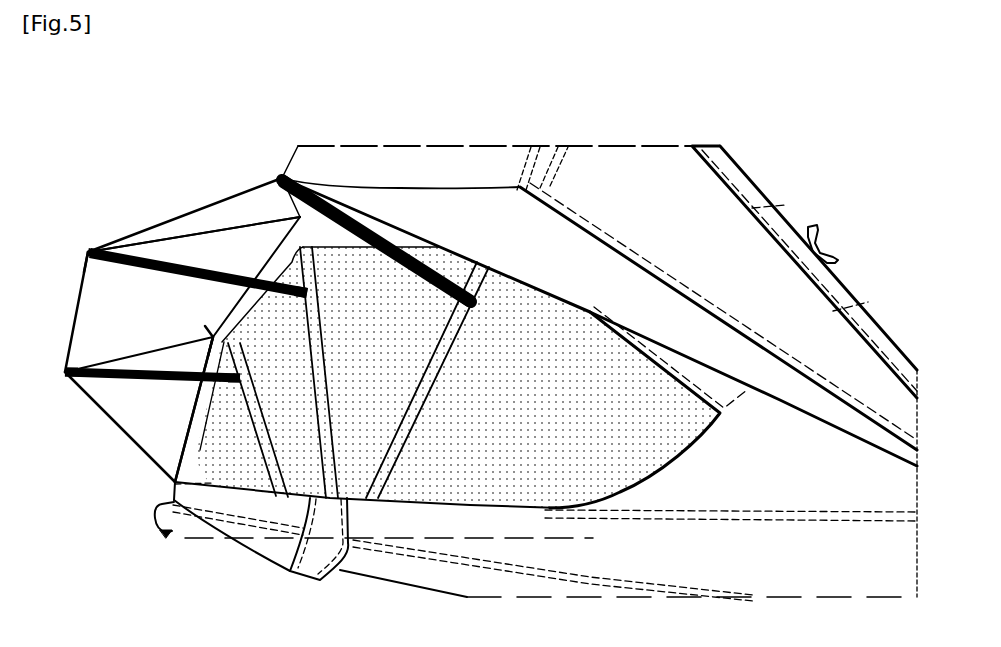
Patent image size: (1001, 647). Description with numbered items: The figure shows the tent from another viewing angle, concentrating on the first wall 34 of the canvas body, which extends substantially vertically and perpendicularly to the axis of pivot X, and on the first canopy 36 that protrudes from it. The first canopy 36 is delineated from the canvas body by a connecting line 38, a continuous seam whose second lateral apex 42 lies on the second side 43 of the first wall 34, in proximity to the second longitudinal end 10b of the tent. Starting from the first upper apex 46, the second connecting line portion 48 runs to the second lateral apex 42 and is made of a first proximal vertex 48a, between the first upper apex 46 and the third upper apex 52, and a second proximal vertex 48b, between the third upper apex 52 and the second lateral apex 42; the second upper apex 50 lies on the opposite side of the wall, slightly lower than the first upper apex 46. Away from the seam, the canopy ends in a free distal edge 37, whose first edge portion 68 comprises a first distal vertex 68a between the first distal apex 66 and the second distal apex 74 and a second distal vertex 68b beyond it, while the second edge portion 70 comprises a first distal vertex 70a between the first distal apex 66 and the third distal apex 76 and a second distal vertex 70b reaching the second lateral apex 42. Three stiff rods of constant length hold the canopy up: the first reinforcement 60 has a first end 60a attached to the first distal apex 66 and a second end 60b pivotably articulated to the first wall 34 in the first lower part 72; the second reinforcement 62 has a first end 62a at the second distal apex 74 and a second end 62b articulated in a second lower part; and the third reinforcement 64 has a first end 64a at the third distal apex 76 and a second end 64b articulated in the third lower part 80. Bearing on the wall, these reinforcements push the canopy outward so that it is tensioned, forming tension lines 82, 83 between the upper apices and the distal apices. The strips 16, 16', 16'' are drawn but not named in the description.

The second longitudinal end 10b is at (170, 534).
The strip 16 is at (334, 372).
The strip 16' is at (429, 380).
The strip 16'' is at (252, 420).
The first wall 34 is at (543, 454).
The first canopy 36 is at (728, 345).
The free distal edge 37 is at (807, 417).
The connecting line 38 is at (611, 238).
The second lateral apex 42 is at (175, 483).
The second side 43 is at (203, 502).
The first upper apex 46 is at (166, 297).
The second connecting line portion 48 is at (167, 266).
The first proximal vertex 48a is at (266, 262).
The second proximal vertex 48b is at (199, 397).
The second upper apex 50 is at (522, 188).
The third upper apex 52 is at (213, 336).
The first reinforcement 60 is at (120, 264).
The first end 60a is at (88, 250).
The second end 60b is at (310, 297).
The second reinforcement 62 is at (390, 258).
The first end 62a is at (293, 172).
The second end 62b is at (477, 308).
The third reinforcement 64 is at (157, 368).
The first end 64a is at (65, 378).
The second end 64b is at (240, 374).
The first distal apex 66 is at (85, 209).
The first edge portion 68 is at (502, 300).
The first distal vertex 68a is at (257, 186).
The second distal vertex 68b is at (580, 306).
The second edge portion 70 is at (76, 322).
The first distal vertex 70a is at (82, 272).
The second distal vertex 70b is at (127, 440).
The first lower part 72 is at (350, 319).
The second distal apex 74 is at (350, 137).
The third distal apex 76 is at (65, 405).
The third lower part 80 is at (104, 362).
The tension line 82 is at (194, 234).
The tension line 83 is at (380, 186).
The axis of pivot X is at (389, 556).